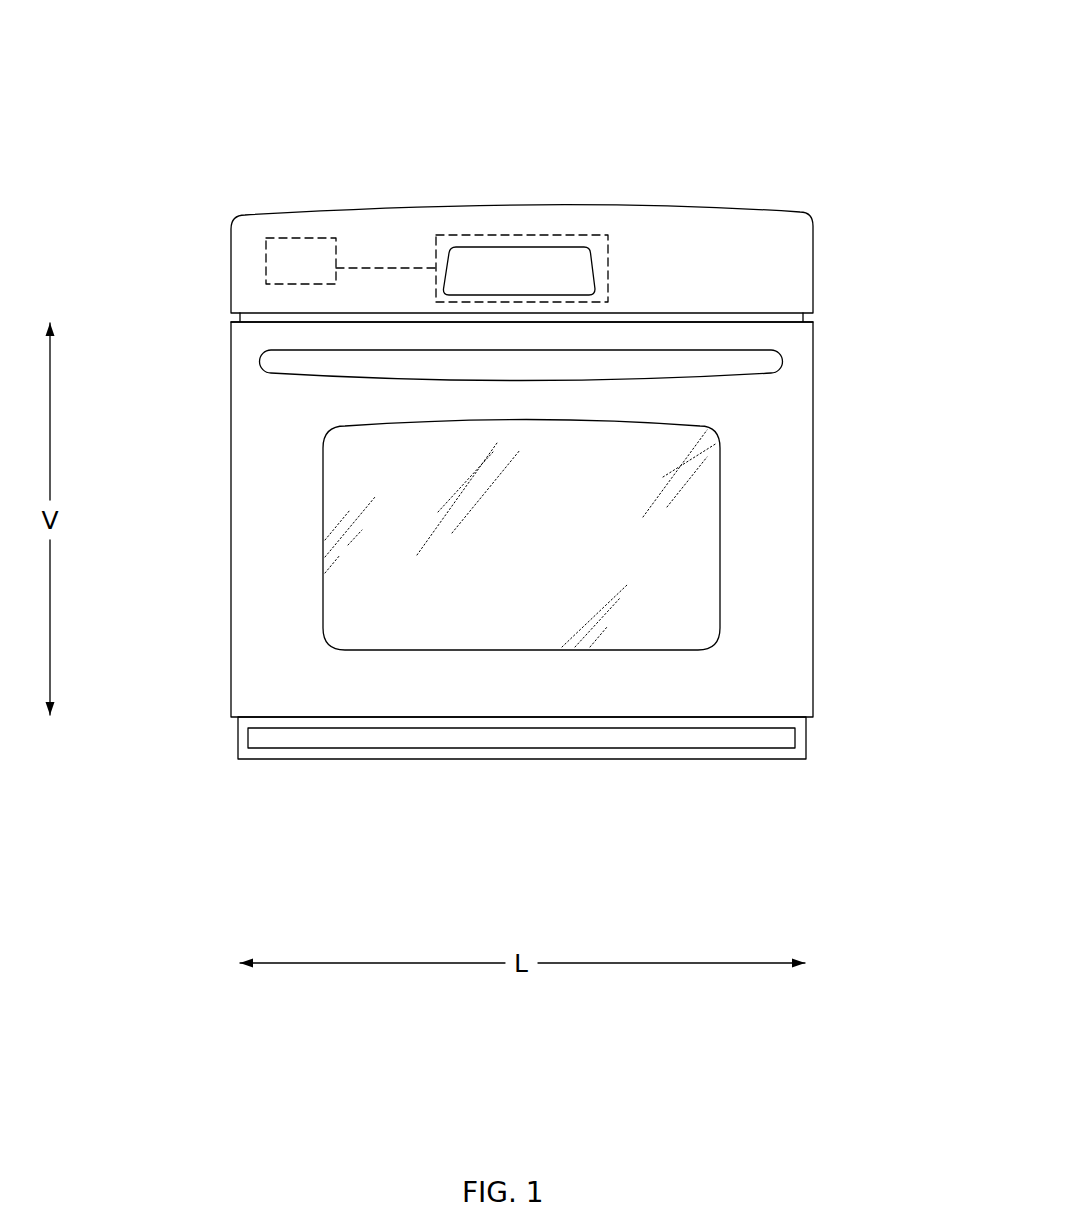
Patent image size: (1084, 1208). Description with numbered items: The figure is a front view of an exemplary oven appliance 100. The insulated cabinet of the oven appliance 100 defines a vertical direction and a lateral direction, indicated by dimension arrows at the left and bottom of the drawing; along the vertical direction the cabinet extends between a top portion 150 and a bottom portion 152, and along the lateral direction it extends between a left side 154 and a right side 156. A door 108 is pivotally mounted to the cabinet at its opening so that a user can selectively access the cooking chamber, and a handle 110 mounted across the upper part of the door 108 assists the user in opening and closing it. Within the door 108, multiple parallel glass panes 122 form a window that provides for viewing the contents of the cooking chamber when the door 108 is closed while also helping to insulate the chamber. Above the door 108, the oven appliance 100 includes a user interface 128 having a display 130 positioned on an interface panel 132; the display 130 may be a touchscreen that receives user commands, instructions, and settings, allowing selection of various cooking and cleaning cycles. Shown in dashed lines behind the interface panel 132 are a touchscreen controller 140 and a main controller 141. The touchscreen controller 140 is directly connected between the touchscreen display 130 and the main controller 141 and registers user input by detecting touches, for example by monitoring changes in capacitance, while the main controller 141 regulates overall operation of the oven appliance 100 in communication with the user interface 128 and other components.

The oven appliance 100 is at (237, 78).
The door 108 is at (768, 510).
The handle 110 is at (767, 367).
The glass panes 122 is at (700, 602).
The user interface 128 is at (578, 260).
The display 130 is at (540, 253).
The interface panel 132 is at (740, 247).
The touchscreen controller 140 is at (452, 235).
The main controller 141 is at (295, 238).
The top portion 150 is at (240, 188).
The bottom portion 152 is at (772, 768).
The left side 154 is at (218, 705).
The right side 156 is at (822, 332).